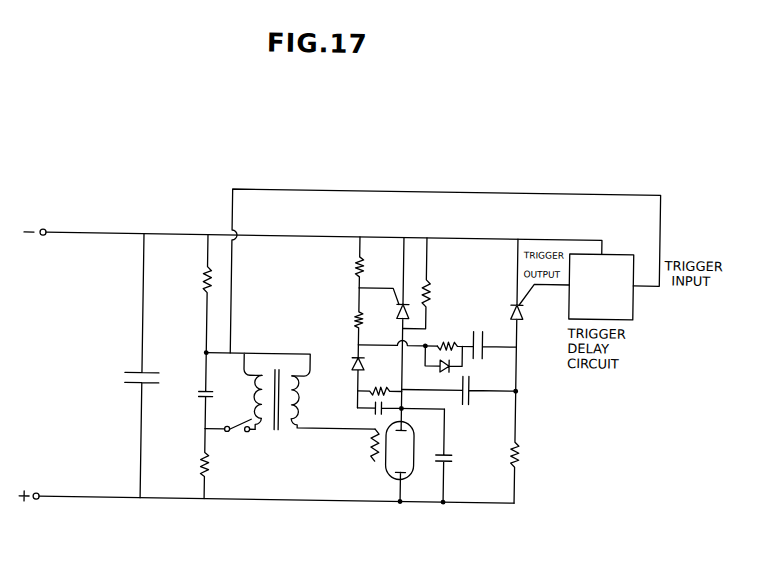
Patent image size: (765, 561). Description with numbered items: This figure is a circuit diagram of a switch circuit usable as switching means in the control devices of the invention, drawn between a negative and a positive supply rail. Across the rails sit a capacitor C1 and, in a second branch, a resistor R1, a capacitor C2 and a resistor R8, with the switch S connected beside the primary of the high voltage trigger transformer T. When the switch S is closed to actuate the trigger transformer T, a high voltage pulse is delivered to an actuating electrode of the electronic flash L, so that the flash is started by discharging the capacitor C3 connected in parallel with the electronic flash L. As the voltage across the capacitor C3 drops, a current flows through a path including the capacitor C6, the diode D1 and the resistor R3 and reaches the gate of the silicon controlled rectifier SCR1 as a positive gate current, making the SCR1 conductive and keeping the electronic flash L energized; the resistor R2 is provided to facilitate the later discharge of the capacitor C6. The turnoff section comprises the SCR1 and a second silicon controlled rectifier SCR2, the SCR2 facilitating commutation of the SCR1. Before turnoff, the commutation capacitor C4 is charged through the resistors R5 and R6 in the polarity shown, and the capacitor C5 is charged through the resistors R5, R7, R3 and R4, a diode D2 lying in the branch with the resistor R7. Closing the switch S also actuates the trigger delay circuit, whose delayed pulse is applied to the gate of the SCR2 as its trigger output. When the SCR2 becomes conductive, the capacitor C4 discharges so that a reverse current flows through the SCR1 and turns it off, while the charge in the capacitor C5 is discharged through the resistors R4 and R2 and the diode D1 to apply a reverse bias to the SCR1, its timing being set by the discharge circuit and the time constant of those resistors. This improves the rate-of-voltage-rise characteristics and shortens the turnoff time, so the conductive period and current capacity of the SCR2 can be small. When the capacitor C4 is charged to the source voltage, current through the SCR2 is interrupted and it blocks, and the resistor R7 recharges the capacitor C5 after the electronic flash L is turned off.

The capacitor C1 is at (131, 365).
The resistor R1 is at (195, 293).
The capacitor C2 is at (194, 390).
The resistor R8 is at (213, 464).
The switch S is at (230, 433).
The high voltage trigger transformer T is at (290, 401).
The resistor R4 is at (351, 262).
The resistor R3 is at (349, 316).
The silicon controlled rectifier SCR1 is at (383, 323).
The resistor R6 is at (426, 284).
The diode D1 is at (346, 375).
The resistor R2 is at (380, 383).
The capacitor C6 is at (400, 415).
The resistor R7 is at (455, 338).
The diode D2 is at (444, 368).
The capacitor C5 is at (494, 349).
The commutation capacitor C4 is at (458, 399).
The electronic flash L is at (405, 455).
The capacitor C3 is at (452, 455).
The resistor R5 is at (523, 447).
The silicon controlled rectifier SCR2 is at (540, 315).